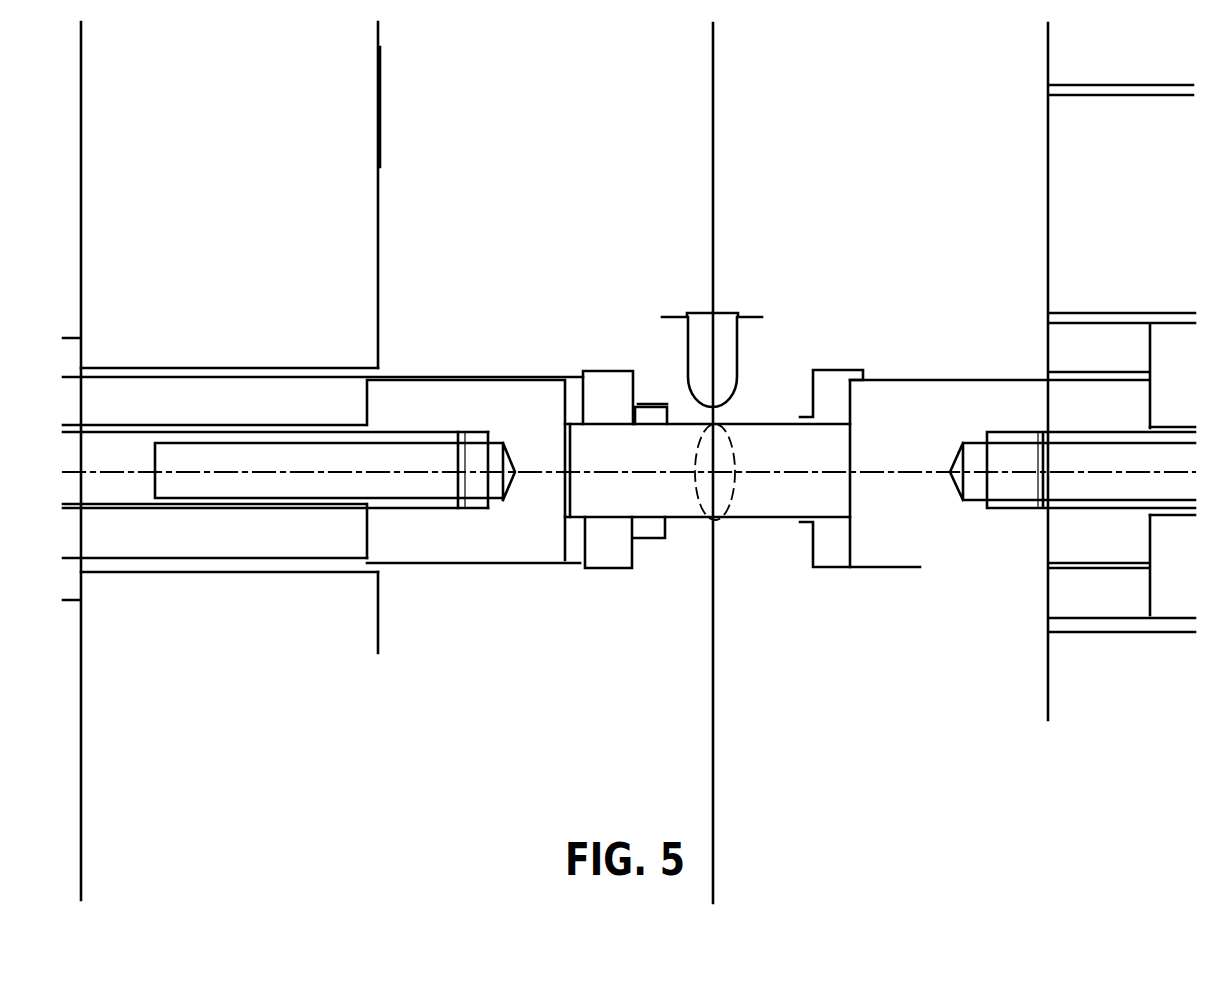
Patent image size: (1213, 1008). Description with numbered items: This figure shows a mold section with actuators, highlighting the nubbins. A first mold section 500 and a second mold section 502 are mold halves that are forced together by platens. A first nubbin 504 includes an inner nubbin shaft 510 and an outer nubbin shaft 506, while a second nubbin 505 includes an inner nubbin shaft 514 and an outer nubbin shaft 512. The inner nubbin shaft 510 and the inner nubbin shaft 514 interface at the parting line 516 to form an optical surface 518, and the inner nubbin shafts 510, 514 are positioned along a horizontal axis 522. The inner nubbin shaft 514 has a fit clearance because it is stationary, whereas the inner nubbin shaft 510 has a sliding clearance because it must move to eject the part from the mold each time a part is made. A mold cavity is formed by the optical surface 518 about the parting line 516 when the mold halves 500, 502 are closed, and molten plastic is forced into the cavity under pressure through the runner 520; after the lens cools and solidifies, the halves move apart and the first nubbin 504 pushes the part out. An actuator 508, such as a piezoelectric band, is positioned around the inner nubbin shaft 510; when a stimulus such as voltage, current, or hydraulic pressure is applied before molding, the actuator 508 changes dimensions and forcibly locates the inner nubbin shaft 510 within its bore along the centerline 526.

The first mold section 500 is at (557, 168).
The second mold section 502 is at (948, 188).
The first nubbin 504 is at (512, 532).
The second nubbin 505 is at (938, 530).
The outer nubbin shaft 506 is at (432, 375).
The actuator 508 is at (650, 402).
The inner nubbin shaft 510 is at (612, 517).
The outer nubbin shaft 512 is at (923, 375).
The inner nubbin shaft 514 is at (790, 422).
The parting line 516 is at (715, 132).
The optical surface 518 is at (708, 516).
The runner 520 is at (762, 318).
The horizontal axis 522 is at (752, 474).
The centerline 526 is at (390, 473).